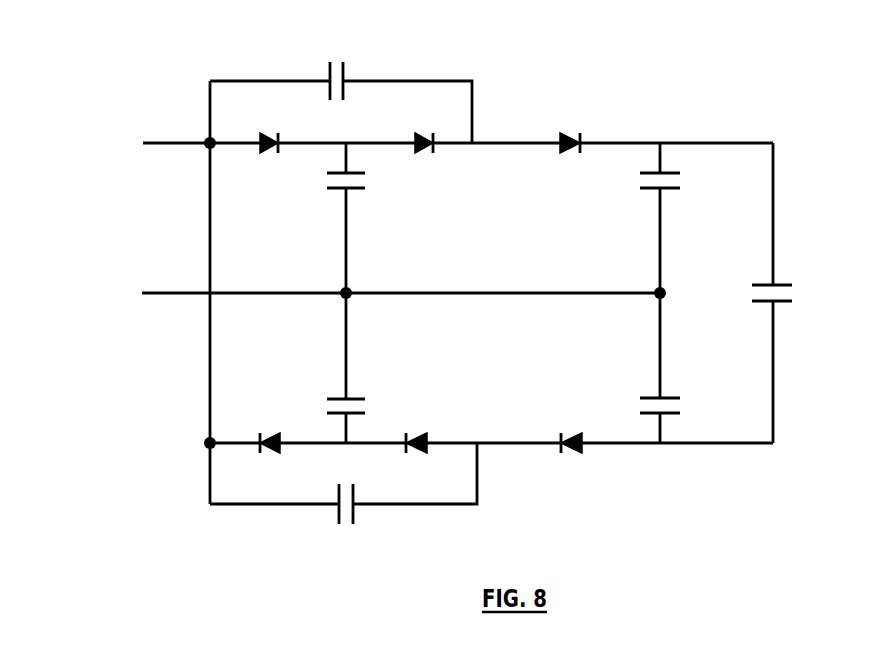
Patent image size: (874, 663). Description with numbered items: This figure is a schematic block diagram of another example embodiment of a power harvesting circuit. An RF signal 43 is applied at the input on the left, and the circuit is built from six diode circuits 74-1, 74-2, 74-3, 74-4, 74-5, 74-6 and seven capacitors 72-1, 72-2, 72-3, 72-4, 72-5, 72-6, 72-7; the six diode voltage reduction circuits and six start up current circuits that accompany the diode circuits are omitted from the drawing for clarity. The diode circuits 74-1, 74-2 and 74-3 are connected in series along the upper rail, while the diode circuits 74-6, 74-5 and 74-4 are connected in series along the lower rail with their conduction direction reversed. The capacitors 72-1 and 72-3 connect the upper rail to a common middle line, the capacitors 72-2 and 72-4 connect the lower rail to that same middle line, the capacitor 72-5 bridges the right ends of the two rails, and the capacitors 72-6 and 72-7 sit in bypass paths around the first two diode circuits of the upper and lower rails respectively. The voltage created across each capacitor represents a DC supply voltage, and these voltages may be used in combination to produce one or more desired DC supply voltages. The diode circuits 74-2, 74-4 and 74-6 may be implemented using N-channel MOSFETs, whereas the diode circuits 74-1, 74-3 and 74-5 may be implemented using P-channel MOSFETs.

The RF signal 43 is at (130, 218).
The capacitor 72-1 is at (407, 221).
The capacitor 72-2 is at (407, 389).
The capacitor 72-3 is at (717, 221).
The capacitor 72-4 is at (717, 391).
The capacitor 72-5 is at (830, 339).
The capacitor 72-6 is at (357, 46).
The capacitor 72-7 is at (367, 562).
The diode circuit 74-1 is at (290, 191).
The diode circuit 74-2 is at (445, 191).
The diode circuit 74-3 is at (590, 191).
The diode circuit 74-4 is at (590, 419).
The diode circuit 74-5 is at (435, 421).
The diode circuit 74-6 is at (290, 416).